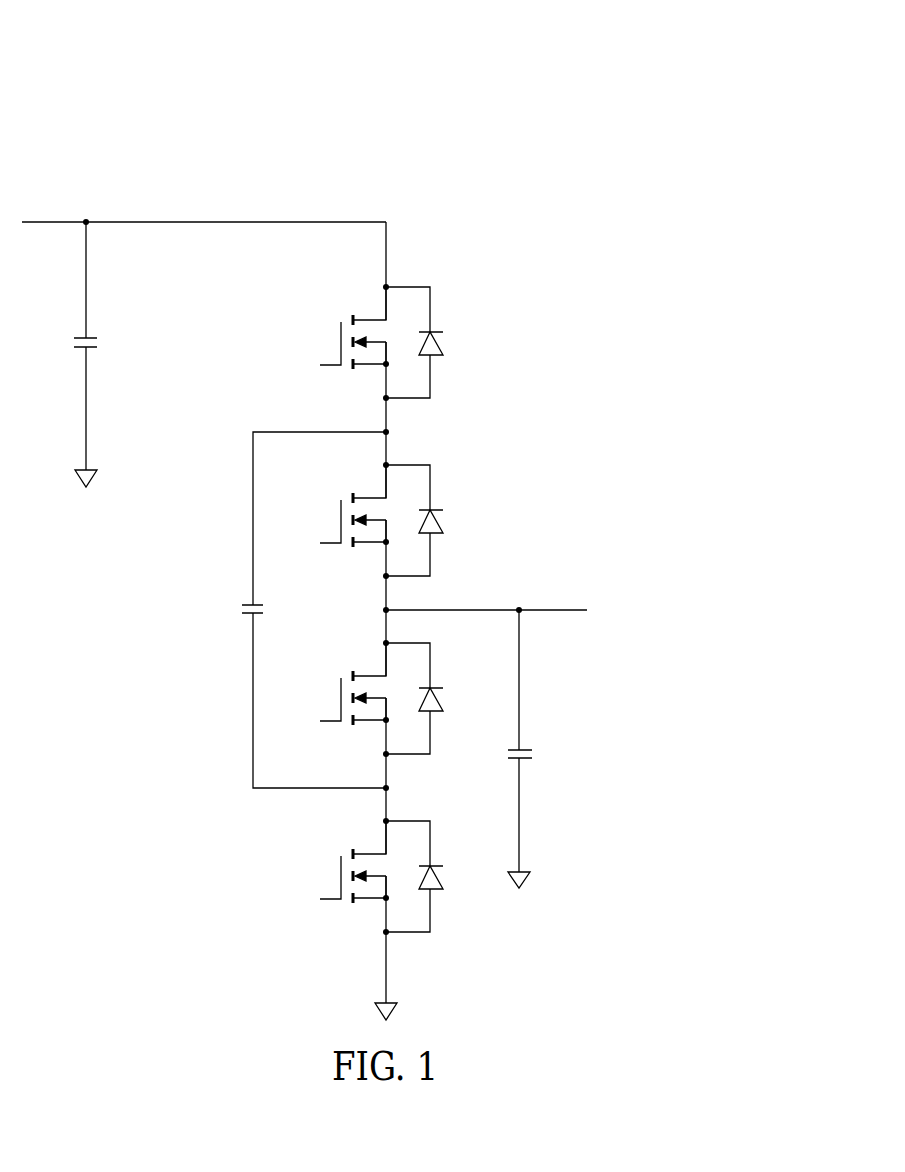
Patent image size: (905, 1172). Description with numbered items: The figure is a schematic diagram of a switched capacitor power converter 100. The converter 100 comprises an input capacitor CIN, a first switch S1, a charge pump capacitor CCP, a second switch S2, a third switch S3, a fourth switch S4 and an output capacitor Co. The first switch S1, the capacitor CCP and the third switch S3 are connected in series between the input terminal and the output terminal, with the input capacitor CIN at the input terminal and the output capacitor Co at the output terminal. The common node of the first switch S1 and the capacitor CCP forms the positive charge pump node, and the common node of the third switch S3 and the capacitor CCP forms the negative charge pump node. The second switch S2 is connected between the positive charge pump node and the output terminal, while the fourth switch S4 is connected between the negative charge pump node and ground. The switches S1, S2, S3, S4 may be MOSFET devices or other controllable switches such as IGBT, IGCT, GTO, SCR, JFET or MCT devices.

The switched capacitor power converter 100 is at (575, 88).
The first switch S1 is at (375, 342).
The second switch S2 is at (375, 520).
The third switch S3 is at (375, 698).
The fourth switch S4 is at (375, 876).
The input capacitor CIN is at (64, 354).
The charge pump capacitor CCP is at (290, 610).
The output capacitor Co is at (539, 749).